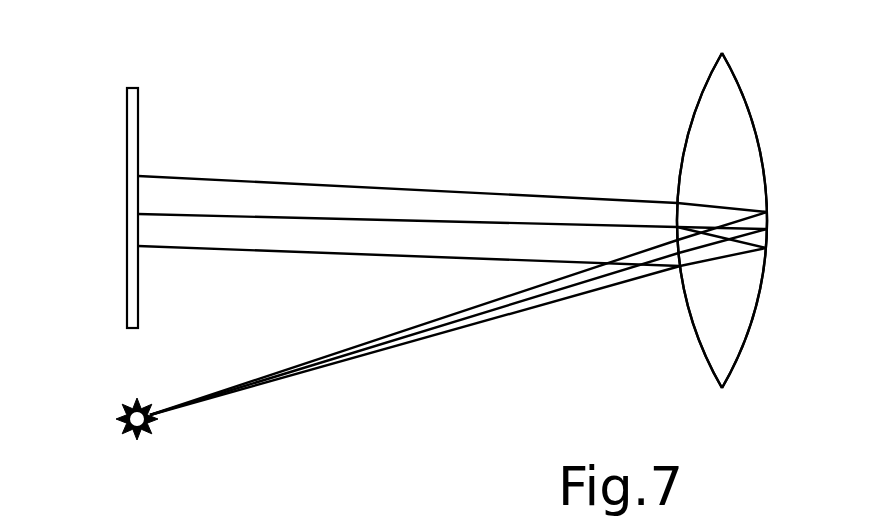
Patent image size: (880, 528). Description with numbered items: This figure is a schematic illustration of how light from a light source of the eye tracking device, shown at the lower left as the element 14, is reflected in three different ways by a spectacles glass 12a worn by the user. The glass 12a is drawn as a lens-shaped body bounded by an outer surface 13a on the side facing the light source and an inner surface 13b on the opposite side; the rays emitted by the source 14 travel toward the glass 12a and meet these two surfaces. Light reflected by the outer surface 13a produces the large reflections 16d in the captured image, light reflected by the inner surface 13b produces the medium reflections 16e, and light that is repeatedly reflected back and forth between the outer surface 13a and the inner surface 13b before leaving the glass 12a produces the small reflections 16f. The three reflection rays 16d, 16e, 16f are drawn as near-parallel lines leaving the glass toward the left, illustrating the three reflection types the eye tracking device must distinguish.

The glass 12a is at (728, 87).
The outer surface 13a is at (686, 140).
The inner surface 13b is at (764, 170).
The light source 14 is at (118, 420).
The large reflections 16d is at (215, 253).
The medium reflections 16e is at (302, 215).
The small reflections 16f is at (213, 180).